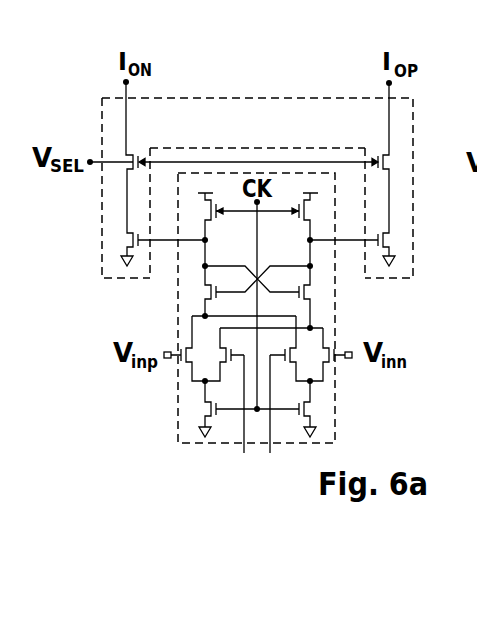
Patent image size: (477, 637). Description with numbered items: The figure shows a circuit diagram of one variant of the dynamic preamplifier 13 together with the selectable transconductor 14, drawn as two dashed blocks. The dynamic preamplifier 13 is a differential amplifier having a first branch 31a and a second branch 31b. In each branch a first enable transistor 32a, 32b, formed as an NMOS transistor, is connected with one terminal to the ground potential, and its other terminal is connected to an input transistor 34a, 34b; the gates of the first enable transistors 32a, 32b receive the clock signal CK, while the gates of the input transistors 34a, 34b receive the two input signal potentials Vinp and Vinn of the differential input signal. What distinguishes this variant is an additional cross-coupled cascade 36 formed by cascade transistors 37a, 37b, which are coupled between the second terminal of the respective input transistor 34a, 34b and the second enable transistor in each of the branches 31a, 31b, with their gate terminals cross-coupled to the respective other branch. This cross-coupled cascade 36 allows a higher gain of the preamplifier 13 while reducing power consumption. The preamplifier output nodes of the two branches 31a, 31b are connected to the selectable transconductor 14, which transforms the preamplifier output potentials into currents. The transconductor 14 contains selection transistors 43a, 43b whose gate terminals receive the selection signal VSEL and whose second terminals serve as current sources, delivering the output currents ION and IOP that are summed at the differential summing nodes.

The dynamic preamplifier 13 is at (197, 448).
The selectable transconductor 14 is at (264, 97).
The first branch 31a is at (200, 311).
The second branch 31b is at (311, 328).
The first enable transistor 32a is at (203, 408).
The first enable transistor 32b is at (317, 410).
The input transistor 34a is at (183, 376).
The input transistor 34b is at (330, 372).
The cross-coupled cascade 36 is at (286, 297).
The cascade transistor 37a is at (204, 289).
The cascade transistor 37b is at (310, 292).
The selection transistor 43a is at (126, 157).
The selection transistor 43b is at (393, 157).